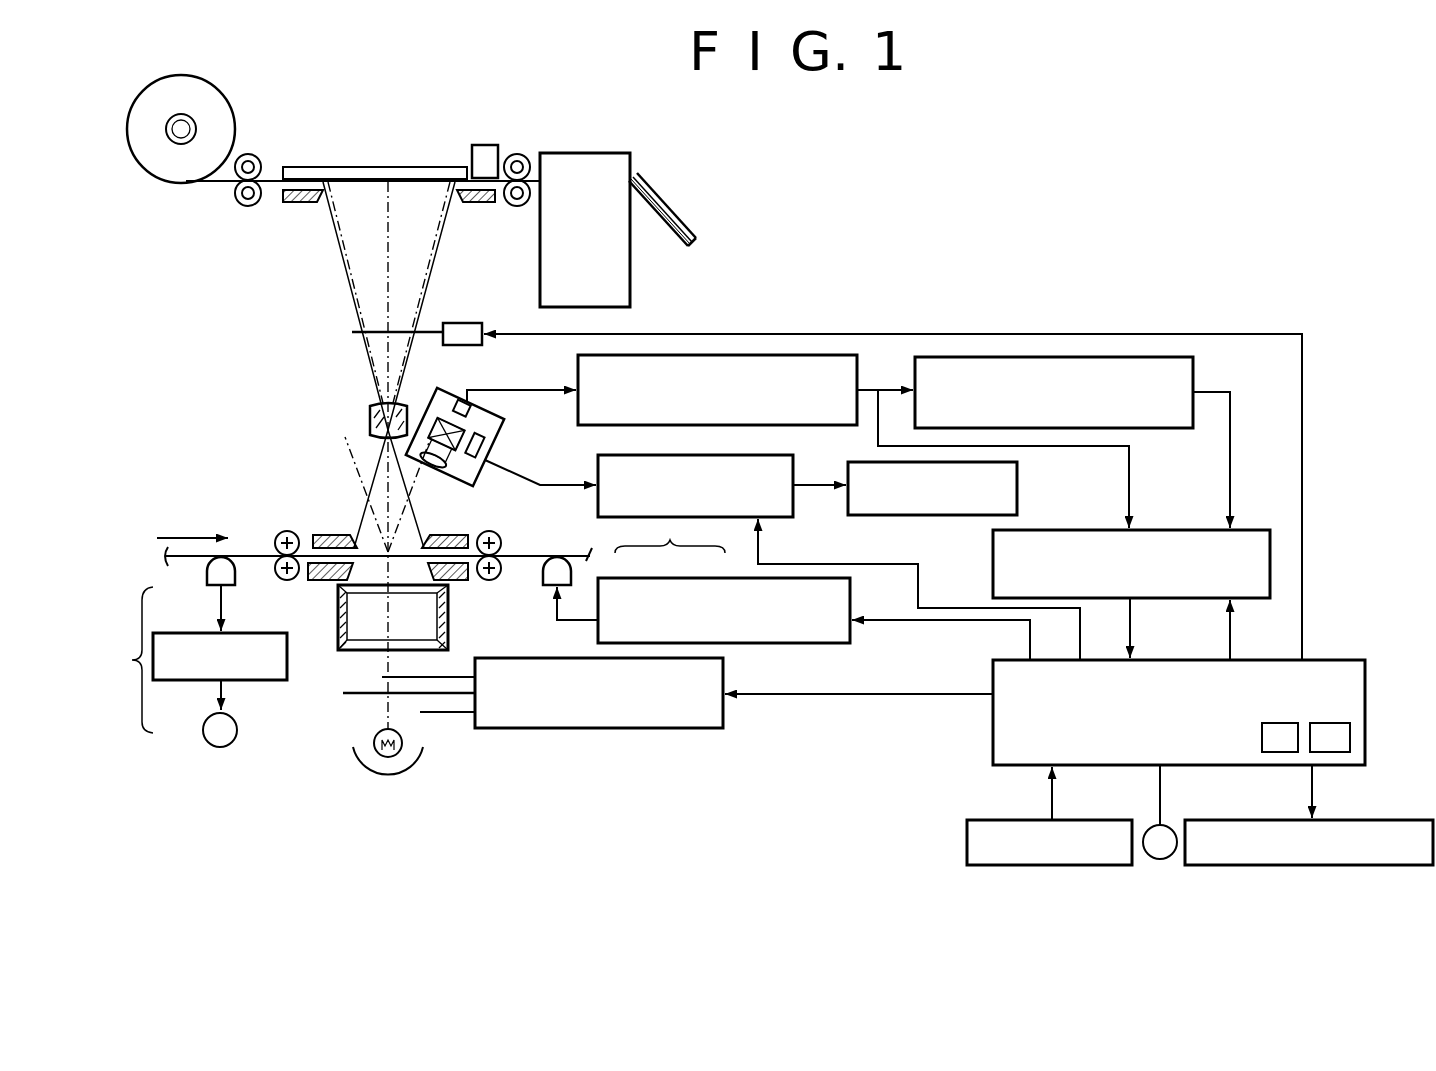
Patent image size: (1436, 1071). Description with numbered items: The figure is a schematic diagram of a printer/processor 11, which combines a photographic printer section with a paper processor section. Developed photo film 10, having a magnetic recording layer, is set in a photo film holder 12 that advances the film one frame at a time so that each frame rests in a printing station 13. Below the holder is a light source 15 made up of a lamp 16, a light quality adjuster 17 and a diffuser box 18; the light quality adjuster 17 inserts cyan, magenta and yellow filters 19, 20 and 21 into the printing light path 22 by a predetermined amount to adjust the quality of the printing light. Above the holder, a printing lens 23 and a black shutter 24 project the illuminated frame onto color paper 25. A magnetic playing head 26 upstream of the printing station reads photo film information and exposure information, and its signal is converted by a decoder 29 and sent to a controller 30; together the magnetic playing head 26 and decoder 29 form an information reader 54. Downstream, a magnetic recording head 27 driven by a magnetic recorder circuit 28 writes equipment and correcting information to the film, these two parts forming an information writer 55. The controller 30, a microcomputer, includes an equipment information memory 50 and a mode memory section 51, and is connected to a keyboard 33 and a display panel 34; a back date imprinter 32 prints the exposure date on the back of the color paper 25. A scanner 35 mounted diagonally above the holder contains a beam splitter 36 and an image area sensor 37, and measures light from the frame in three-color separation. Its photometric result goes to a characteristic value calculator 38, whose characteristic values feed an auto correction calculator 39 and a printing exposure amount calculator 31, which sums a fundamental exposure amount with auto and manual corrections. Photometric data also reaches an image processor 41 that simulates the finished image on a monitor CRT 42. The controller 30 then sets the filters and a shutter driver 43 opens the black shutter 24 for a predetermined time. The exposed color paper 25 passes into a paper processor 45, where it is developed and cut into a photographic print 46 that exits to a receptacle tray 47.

The photo film 10 is at (255, 553).
The printer/processor 11 is at (253, 390).
The photo film holder 12 is at (322, 580).
The printing station 13 is at (378, 545).
The light source 15 is at (377, 782).
The lamp 16 is at (373, 735).
The light quality adjuster 17 is at (590, 731).
The diffuser box 18 is at (448, 602).
The cyan filter 19 is at (455, 675).
The magenta filter 20 is at (360, 688).
The yellow filter 21 is at (455, 715).
The printing light path 22 is at (387, 475).
The printing lens 23 is at (370, 418).
The black shutter 24 is at (358, 330).
The color paper 25 is at (218, 185).
The magnetic playing head 26 is at (205, 572).
The magnetic recording head 27 is at (575, 570).
The magnetic recorder circuit 28 is at (735, 576).
The decoder 29 is at (172, 682).
The controller 30 is at (1183, 767).
The printing exposure amount calculator 31 is at (1205, 602).
The back date imprinter 32 is at (487, 143).
The keyboard 33 is at (1073, 818).
The display panel 34 is at (1355, 817).
The scanner 35 is at (457, 382).
The beam splitter 36 is at (428, 417).
The image area sensor 37 is at (472, 480).
The characteristic value calculator 38 is at (578, 415).
The auto correction calculator 39 is at (1195, 373).
The image processor 41 is at (595, 468).
The monitor CRT 42 is at (1018, 490).
The shutter driver 43 is at (462, 322).
The paper processor 45 is at (540, 248).
The photographic print 46 is at (672, 227).
The receptacle tray 47 is at (667, 245).
The equipment information memory 50 is at (1273, 722).
The mode memory section 51 is at (1337, 722).
The information reader 54 is at (124, 660).
The information writer 55 is at (670, 534).